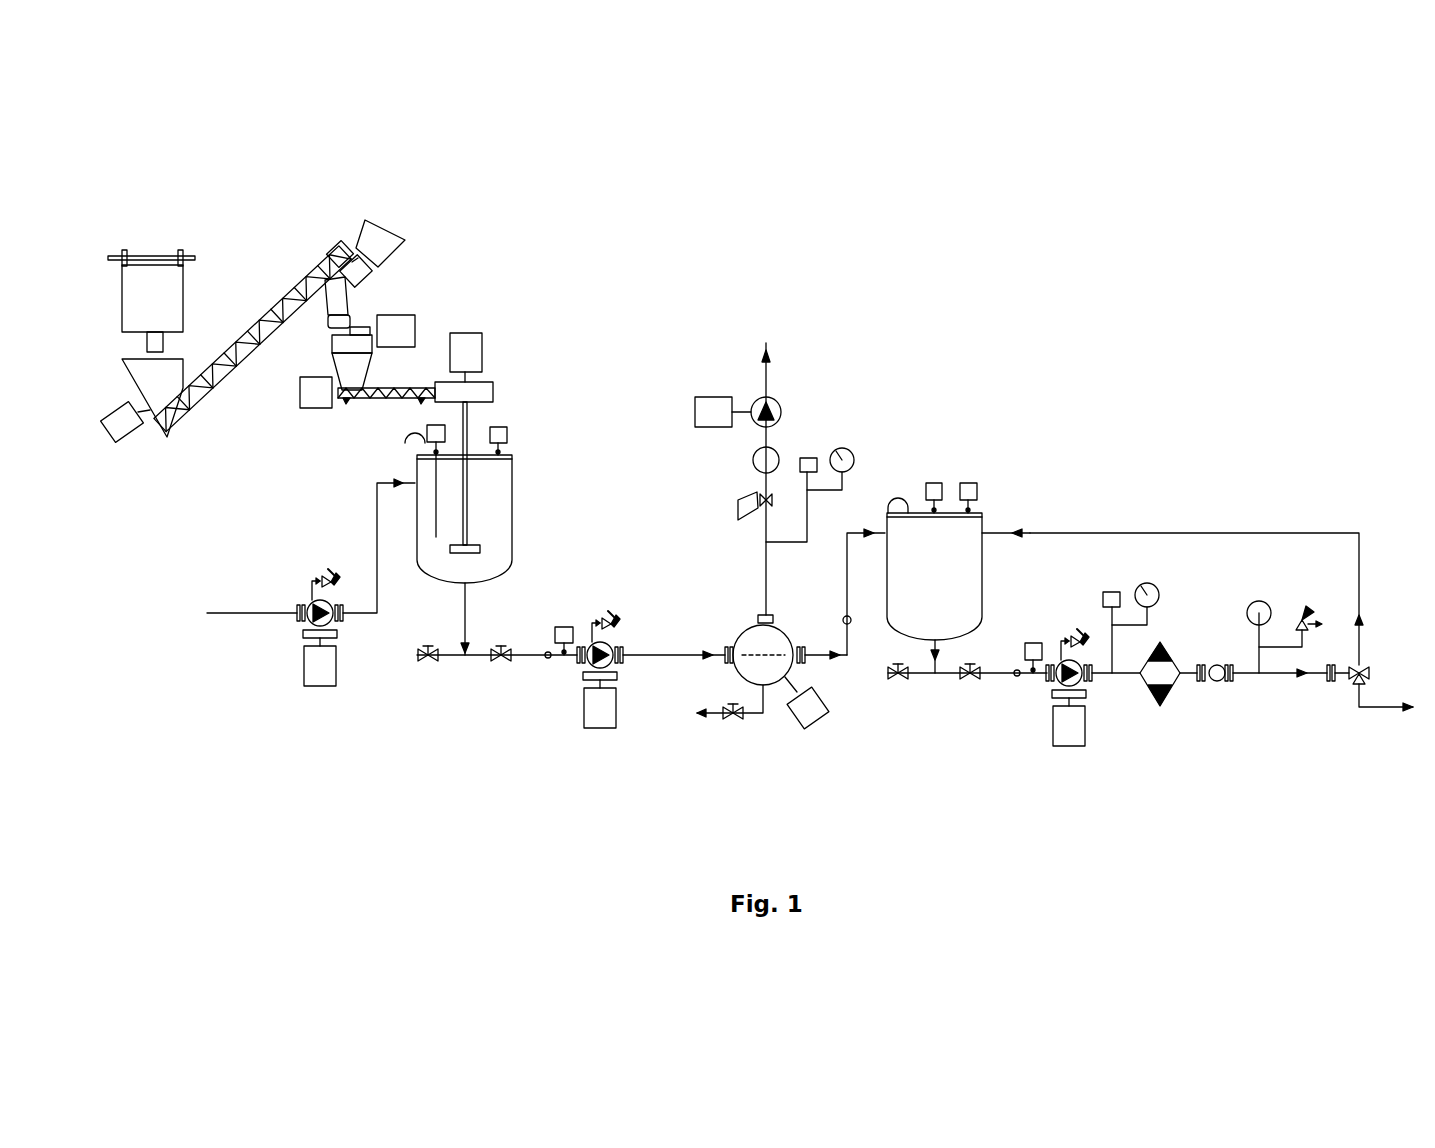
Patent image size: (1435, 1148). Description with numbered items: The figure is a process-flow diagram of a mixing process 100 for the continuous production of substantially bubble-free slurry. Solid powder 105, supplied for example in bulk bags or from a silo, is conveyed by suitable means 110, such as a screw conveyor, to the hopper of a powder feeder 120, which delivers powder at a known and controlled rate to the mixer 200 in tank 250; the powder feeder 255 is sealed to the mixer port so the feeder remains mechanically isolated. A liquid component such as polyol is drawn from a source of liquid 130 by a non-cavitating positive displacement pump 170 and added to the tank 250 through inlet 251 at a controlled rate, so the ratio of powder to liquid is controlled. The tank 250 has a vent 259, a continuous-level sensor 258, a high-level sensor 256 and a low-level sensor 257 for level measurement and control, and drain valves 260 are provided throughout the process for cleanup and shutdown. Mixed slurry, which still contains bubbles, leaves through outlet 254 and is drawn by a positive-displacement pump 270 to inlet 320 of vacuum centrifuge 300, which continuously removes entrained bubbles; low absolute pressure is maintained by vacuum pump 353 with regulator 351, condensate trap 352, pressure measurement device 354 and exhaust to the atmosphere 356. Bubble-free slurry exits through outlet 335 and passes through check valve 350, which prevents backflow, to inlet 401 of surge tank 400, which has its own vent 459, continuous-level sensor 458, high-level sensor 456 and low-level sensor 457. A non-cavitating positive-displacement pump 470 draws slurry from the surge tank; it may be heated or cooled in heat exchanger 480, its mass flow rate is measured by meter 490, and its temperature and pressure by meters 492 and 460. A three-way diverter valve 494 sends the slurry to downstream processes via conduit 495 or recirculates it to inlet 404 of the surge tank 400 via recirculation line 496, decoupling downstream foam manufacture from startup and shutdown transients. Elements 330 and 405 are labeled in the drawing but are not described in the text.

The mixing process 100 is at (1194, 162).
The solid powder 105 is at (153, 257).
The conveying means 110 is at (282, 298).
The powder feeder 120 is at (321, 352).
The source of liquid 130 is at (240, 612).
The non-cavitating positive displacement pump 170 is at (310, 602).
The mixer 200 is at (497, 385).
The tank 250 is at (513, 505).
The inlet 251 is at (377, 515).
The outlet 254 is at (470, 607).
The powder feeder 255 is at (398, 387).
The high-level sensor 256 is at (508, 430).
The low-level sensor 257 is at (563, 627).
The continuous-level sensor 258 is at (425, 434).
The vent 259 is at (405, 443).
The drain valves 260 is at (440, 663).
The positive-displacement pump 270 is at (587, 675).
The vacuum centrifuge 300 is at (737, 672).
The inlet 320 is at (735, 642).
The vessel outlet 330 is at (760, 615).
The outlet 335 is at (803, 663).
The check valve 350 is at (843, 618).
The regulator 351 is at (742, 492).
The condensate trap 352 is at (752, 458).
The vacuum pump 353 is at (753, 398).
The pressure measurement device 354 is at (812, 455).
The exhaust to the atmosphere 356 is at (721, 324).
The surge tank 400 is at (982, 513).
The inlet 401 is at (857, 527).
The inlet 404 is at (992, 530).
The tank outlet valve 405 is at (962, 677).
The high-level sensor 456 is at (975, 483).
The low-level sensor 457 is at (1033, 643).
The continuous-level sensor 458 is at (940, 483).
The vent 459 is at (902, 497).
The pressure meter 460 is at (1115, 588).
The non-cavitating positive-displacement pump 470 is at (1083, 688).
The heat exchanger 480 is at (1160, 643).
The mass flow meter 490 is at (1218, 683).
The temperature meter 492 is at (1262, 602).
The three-way diverter valve 494 is at (1363, 665).
The conduit 495 is at (1368, 707).
The recirculation line 496 is at (1216, 533).